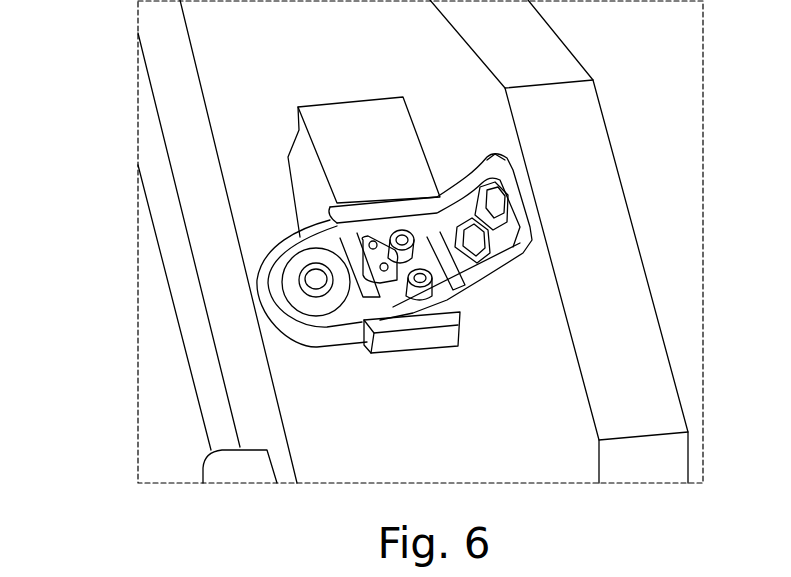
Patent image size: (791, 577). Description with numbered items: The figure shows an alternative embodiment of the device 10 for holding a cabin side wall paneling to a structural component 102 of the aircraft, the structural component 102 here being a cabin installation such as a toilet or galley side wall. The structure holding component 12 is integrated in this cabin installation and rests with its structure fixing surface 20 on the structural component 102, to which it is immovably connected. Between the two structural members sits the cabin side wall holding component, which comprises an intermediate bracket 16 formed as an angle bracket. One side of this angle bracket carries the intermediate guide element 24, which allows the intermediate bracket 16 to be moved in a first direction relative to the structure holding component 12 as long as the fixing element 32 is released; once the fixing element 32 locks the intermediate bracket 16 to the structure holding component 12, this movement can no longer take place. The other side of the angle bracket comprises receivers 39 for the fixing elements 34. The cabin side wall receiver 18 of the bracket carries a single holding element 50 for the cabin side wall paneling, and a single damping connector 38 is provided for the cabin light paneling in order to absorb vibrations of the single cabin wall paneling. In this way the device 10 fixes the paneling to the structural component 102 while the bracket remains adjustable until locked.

The device 10 is at (430, 393).
The structure holding component 12 is at (580, 113).
The intermediate bracket 16 is at (490, 300).
The cabin side wall receiver 18 is at (345, 335).
The structure fixing surface 20 is at (449, 283).
The intermediate guide element 24 is at (523, 255).
The fixing element 32 is at (490, 183).
The fixing elements 34 is at (400, 240).
The damping connector 38 is at (297, 267).
The receivers 39 is at (398, 258).
The holding element 50 is at (288, 155).
The structural component 102 is at (172, 200).